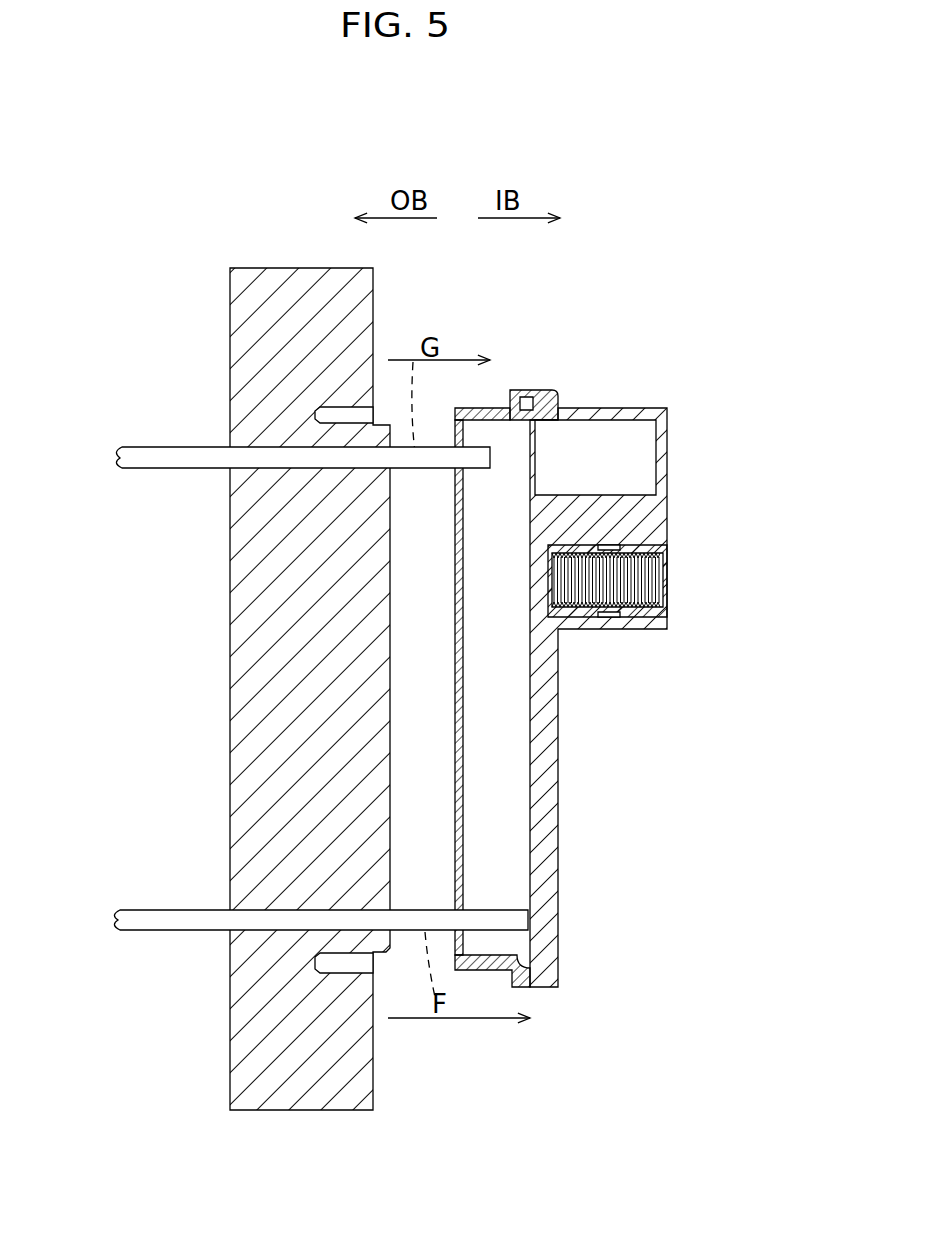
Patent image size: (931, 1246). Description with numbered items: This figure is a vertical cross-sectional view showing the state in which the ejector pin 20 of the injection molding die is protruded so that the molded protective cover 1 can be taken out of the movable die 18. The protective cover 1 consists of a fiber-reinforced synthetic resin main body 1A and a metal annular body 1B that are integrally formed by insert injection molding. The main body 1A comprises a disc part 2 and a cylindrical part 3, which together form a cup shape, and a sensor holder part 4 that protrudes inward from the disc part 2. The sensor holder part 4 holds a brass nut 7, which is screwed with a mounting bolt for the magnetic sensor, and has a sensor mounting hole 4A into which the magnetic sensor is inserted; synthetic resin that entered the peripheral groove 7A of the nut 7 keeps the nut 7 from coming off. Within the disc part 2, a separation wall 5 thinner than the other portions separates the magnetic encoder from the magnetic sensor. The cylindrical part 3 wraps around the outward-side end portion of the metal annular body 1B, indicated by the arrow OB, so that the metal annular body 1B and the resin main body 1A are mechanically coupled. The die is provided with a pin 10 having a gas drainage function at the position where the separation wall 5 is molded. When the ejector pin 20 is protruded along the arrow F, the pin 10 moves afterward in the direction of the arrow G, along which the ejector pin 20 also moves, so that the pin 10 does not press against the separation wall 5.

The protective cover 1 is at (607, 647).
The main body 1A is at (607, 704).
The metal annular body 1B is at (498, 410).
The disc part 2 is at (562, 816).
The cylindrical part 3 is at (543, 990).
The sensor holder part 4 is at (645, 697).
The sensor mounting hole 4A is at (613, 420).
The separation wall 5 is at (536, 464).
The nut 7 is at (663, 612).
The peripheral groove 7A is at (591, 646).
The pin 10 is at (150, 469).
The movable die 18 is at (248, 328).
The ejector pin 20 is at (148, 931).